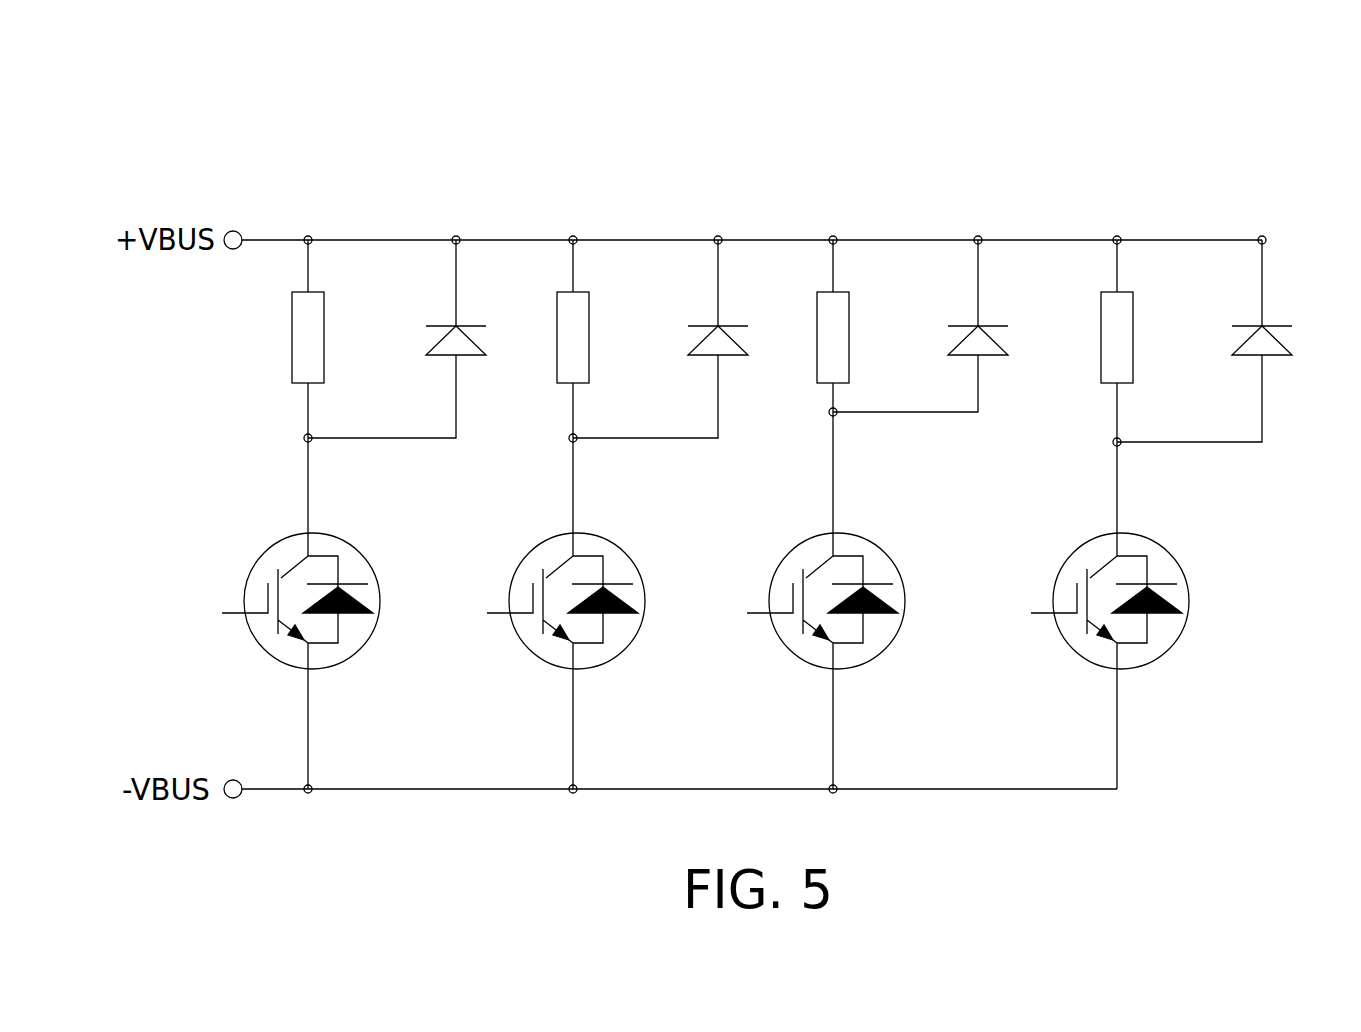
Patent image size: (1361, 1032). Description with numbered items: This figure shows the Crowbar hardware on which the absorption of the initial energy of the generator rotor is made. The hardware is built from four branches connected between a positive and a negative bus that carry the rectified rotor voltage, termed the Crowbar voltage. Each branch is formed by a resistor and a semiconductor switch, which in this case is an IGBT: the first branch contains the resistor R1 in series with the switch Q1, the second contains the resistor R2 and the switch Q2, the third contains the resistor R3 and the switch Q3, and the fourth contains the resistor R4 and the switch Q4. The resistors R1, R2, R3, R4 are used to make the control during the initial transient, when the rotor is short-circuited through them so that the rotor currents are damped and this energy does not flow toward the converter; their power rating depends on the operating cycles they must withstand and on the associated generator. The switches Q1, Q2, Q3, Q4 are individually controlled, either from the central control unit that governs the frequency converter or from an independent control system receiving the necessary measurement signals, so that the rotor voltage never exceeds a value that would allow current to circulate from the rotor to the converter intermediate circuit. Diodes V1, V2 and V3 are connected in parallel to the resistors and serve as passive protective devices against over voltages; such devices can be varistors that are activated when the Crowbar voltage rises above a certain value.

The switch Q1 is at (311, 613).
The switch Q2 is at (576, 613).
The switch Q3 is at (836, 600).
The switch Q4 is at (1120, 615).
The resistor R1 is at (334, 339).
The resistor R2 is at (599, 339).
The resistor R3 is at (859, 326).
The resistor R4 is at (1143, 341).
The diode V1 is at (419, 337).
The diode V2 is at (682, 337).
The diode V3 is at (1084, 339).